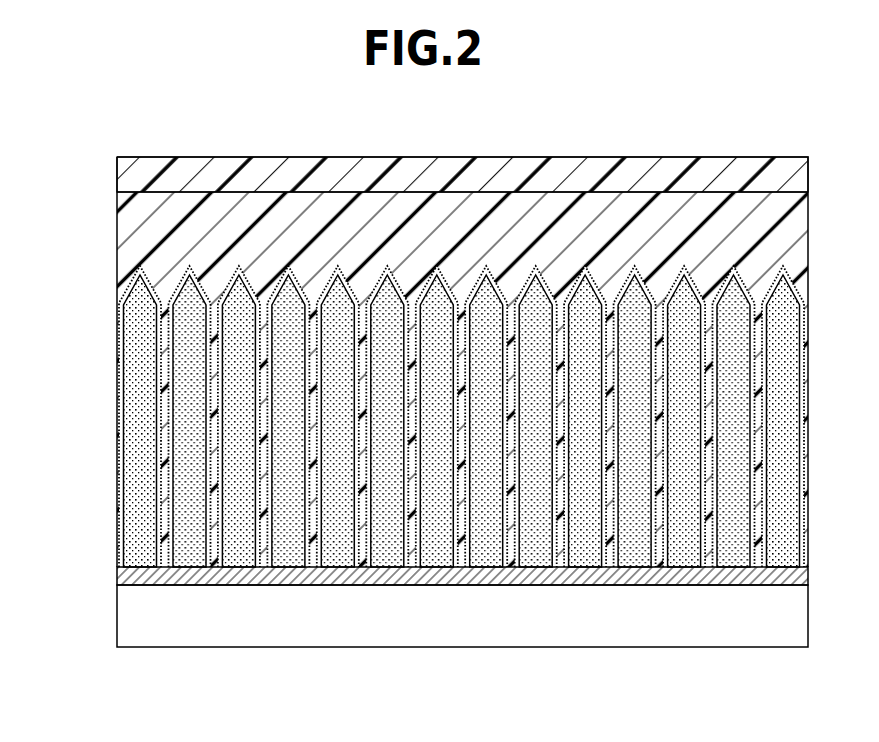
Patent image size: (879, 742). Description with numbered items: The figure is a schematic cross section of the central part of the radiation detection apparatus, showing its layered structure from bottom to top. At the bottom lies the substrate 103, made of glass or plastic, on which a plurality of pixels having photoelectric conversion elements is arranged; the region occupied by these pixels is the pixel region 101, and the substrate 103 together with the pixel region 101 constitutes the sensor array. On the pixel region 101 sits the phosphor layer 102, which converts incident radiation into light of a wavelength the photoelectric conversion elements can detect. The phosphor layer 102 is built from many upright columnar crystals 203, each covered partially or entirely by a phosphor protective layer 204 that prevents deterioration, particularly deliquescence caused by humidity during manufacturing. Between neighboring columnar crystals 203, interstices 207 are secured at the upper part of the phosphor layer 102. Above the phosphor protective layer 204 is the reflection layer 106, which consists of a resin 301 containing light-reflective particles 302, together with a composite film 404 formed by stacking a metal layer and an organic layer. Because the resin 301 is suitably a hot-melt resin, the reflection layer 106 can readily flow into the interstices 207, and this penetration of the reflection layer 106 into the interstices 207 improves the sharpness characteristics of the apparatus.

The pixel region 101 is at (282, 588).
The phosphor layer 102 is at (420, 483).
The substrate 103 is at (160, 628).
The reflection layer 106 is at (421, 198).
The columnar crystals 203 is at (437, 556).
The phosphor protective layer 204 is at (505, 549).
The interstices 207 is at (657, 543).
The resin 301 is at (745, 213).
The light-reflective particles 302 is at (462, 231).
The composite film 404 is at (627, 175).